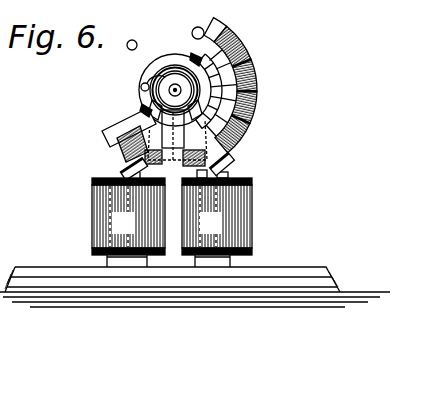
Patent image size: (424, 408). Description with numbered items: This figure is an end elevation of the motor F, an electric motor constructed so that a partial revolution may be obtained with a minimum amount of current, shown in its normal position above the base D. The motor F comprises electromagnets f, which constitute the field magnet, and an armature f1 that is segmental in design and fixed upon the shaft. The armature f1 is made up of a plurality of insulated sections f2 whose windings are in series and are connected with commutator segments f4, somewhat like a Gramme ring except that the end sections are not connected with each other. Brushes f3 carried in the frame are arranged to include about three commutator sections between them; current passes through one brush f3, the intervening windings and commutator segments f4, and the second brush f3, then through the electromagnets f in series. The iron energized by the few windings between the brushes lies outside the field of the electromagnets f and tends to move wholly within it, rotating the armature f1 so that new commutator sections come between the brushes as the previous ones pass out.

The electromagnets f is at (172, 222).
The armature f1 is at (259, 106).
The insulated sections f2 is at (267, 52).
The brushes f3 is at (265, 174).
The commutator segments f4 is at (280, 122).
The motor F is at (239, 100).
The base D is at (195, 275).